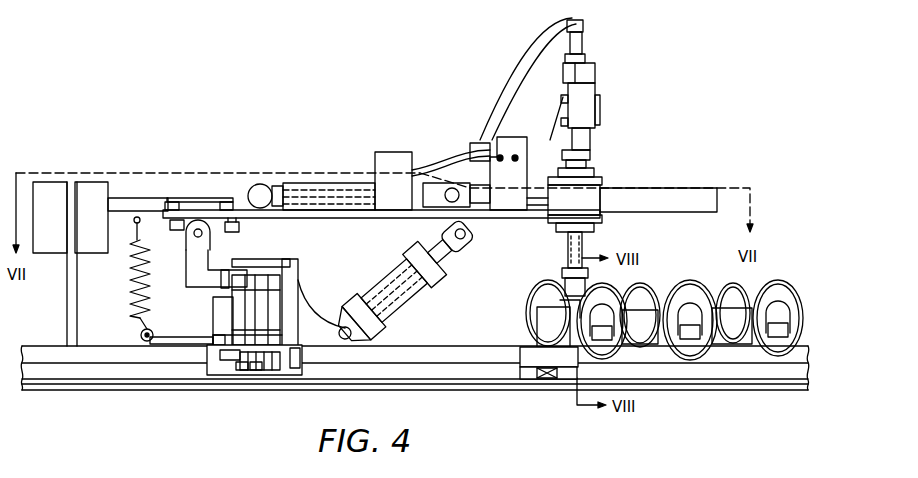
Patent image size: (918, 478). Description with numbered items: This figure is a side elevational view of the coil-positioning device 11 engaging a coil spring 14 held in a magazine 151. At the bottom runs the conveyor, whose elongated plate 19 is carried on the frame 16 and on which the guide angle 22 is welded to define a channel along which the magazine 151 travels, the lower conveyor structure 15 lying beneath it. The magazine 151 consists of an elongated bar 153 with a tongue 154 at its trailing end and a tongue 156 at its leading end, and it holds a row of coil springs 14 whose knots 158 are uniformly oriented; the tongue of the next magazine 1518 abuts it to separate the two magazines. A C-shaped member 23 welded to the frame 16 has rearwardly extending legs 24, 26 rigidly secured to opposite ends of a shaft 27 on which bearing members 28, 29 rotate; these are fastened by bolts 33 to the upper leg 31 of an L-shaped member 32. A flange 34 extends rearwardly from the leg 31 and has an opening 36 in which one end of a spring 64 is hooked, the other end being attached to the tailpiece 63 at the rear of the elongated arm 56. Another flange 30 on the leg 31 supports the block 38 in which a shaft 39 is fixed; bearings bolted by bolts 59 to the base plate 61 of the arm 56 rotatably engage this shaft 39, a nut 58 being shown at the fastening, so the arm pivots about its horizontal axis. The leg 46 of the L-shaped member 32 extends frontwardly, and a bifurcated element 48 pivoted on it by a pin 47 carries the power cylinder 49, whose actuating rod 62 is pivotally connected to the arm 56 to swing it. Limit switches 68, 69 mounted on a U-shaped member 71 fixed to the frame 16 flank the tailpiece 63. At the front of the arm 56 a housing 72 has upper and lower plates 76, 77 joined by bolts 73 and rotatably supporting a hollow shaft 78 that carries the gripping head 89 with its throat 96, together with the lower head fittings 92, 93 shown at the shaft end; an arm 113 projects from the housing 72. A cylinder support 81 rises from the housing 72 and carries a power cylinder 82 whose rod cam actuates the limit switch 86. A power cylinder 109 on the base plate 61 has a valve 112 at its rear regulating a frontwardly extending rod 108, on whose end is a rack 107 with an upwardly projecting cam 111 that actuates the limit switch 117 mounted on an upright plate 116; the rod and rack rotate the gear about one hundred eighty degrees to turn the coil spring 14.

The coil-positioning device 11 is at (392, 88).
The coil spring 14 is at (690, 290).
The frame 15 is at (472, 397).
The frame 16 is at (300, 372).
The elongated plate 19 is at (62, 390).
The guide angle 22 is at (122, 372).
The C-shaped member 23 is at (300, 262).
The leg 24 is at (258, 260).
The leg 26 is at (240, 368).
The shaft 27 is at (252, 370).
The bearing member 28 is at (236, 308).
The bearing member 29 is at (240, 340).
The flange 30 is at (196, 272).
The leg 31 is at (214, 318).
The L-shaped member 32 is at (182, 322).
The bolt 33 is at (225, 270).
The flange 34 is at (163, 344).
The opening 36 is at (143, 330).
The block 38 is at (186, 230).
The shaft 39 is at (197, 229).
The leg 46 is at (302, 300).
The pin 47 is at (386, 337).
The bifurcated element 48 is at (348, 322).
The power cylinder 49 is at (412, 292).
The elongated arm 56 is at (205, 197).
The nut 58 is at (240, 230).
The bolt 59 is at (226, 205).
The base plate 61 is at (378, 216).
The actuating rod 62 is at (442, 234).
The tailpiece 63 is at (126, 200).
The spring 64 is at (130, 263).
The limit switch 68 is at (47, 186).
The limit switch 69 is at (90, 186).
The U-shaped member 71 is at (68, 304).
The housing 72 is at (554, 200).
The bolt 73 is at (595, 168).
The upper plate 76 is at (602, 183).
The lower plate 77 is at (603, 220).
The shaft 78 is at (568, 253).
The cylinder support 81 is at (596, 80).
The power cylinder 82 is at (585, 60).
The limit switch 86 is at (597, 104).
The gripping head 89 is at (550, 288).
The axle housing 92 is at (553, 306).
The nut 93 is at (586, 280).
The throat 96 is at (562, 275).
The rack 107 is at (540, 137).
The rod 108 is at (443, 168).
The power cylinder 109 is at (325, 192).
The cam 111 is at (458, 180).
The valve 112 is at (261, 186).
The arm 113 is at (688, 198).
The plate 116 is at (503, 137).
The limit switch 117 is at (492, 140).
The magazine 151 is at (558, 380).
The elongated bar 153 is at (470, 347).
The tongue 154 is at (540, 352).
The tongue 156 is at (520, 372).
The knot 158 is at (742, 285).
The mounting pin 1518 is at (516, 386).